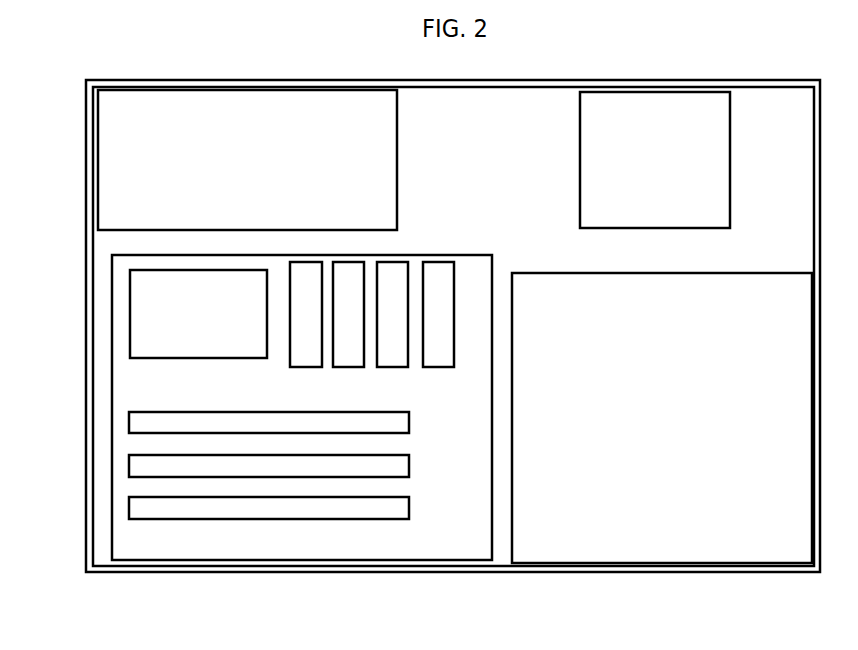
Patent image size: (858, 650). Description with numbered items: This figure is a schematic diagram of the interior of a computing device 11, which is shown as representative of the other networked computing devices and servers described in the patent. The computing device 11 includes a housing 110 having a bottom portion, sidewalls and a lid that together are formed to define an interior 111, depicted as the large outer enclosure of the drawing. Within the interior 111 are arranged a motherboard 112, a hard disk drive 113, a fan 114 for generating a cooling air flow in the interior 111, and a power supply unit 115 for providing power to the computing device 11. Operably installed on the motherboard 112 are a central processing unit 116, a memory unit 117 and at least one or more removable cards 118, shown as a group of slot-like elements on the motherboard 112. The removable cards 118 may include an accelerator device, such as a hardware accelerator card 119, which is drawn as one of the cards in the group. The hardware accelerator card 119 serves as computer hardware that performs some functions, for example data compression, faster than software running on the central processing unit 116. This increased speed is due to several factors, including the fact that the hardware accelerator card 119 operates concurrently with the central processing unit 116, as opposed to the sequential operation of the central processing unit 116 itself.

The computing device 11 is at (84, 576).
The housing 110 is at (93, 145).
The interior 111 is at (456, 217).
The motherboard 112 is at (180, 382).
The hard disk drive 113 is at (598, 394).
The fan 114 is at (670, 157).
The power supply unit 115 is at (241, 157).
The central processing unit 116 is at (168, 334).
The memory unit 117 is at (472, 358).
The removable cards 118 is at (402, 530).
The hardware accelerator card 119 is at (150, 510).